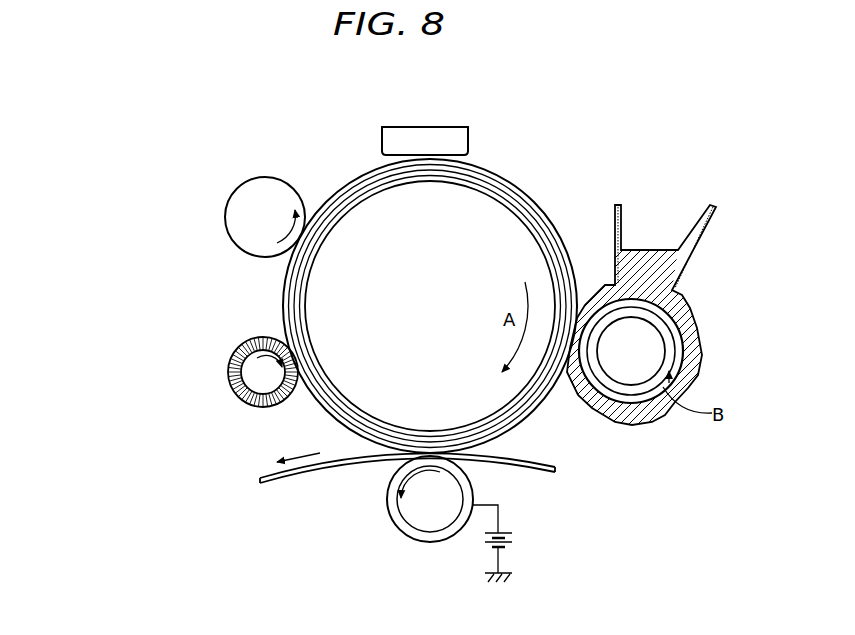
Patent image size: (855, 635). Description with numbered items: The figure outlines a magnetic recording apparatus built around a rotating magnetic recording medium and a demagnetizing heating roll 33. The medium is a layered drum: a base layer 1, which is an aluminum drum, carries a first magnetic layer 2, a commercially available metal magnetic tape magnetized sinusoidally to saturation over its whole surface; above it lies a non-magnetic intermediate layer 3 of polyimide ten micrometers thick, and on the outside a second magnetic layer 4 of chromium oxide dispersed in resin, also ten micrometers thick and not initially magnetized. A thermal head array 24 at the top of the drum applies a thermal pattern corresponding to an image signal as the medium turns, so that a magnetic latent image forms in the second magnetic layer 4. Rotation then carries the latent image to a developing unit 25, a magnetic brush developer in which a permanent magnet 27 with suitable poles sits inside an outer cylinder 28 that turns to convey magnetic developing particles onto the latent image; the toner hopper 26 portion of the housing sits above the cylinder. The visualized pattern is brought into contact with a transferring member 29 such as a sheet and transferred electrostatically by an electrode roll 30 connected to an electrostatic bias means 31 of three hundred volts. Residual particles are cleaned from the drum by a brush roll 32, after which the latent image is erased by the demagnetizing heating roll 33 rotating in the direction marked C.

The base layer 1 is at (453, 178).
The first magnetic layer 2 is at (497, 190).
The non-magnetic intermediate layer 3 is at (528, 207).
The second magnetic layer 4 is at (553, 232).
The thermal head array 24 is at (432, 127).
The developing unit 25 is at (703, 370).
The toner hopper 26 is at (663, 270).
The permanent magnet 27 is at (657, 342).
The outer cylinder 28 is at (632, 400).
The transferring member 29 is at (537, 470).
The transfer roller 30 is at (402, 525).
The electrostatic bias means 31 is at (513, 538).
The brush roll 32 is at (232, 358).
The demagnetizing heating roll 33 is at (248, 178).